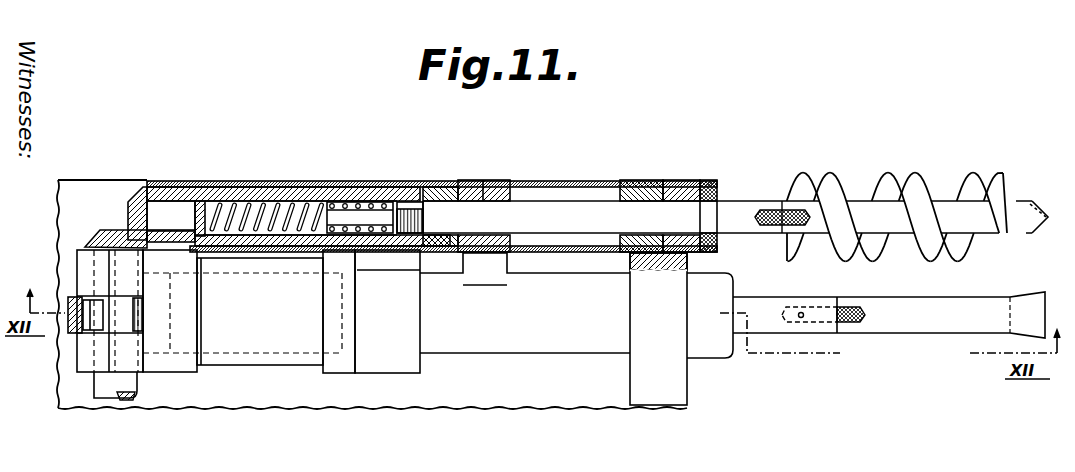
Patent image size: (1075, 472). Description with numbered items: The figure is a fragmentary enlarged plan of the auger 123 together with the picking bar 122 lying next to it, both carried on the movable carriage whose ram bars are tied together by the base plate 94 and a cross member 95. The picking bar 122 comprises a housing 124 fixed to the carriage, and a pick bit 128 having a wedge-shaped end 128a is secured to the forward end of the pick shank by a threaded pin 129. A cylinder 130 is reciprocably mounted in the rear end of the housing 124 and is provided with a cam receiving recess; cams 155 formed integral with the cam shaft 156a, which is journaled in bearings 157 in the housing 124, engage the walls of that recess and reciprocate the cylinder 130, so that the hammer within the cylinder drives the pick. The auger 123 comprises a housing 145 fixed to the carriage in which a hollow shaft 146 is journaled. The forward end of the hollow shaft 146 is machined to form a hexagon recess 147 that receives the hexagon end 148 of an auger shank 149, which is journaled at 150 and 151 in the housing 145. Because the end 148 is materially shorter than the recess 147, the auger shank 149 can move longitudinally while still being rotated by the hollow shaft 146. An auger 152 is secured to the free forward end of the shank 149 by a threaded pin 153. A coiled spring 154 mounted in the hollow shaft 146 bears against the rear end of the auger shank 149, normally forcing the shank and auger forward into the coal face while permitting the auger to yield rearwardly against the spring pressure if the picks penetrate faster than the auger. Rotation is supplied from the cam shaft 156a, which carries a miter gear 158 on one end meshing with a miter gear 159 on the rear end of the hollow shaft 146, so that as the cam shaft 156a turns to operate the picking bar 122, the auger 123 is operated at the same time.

The base plate 94 is at (537, 395).
The cross member 95 is at (660, 370).
The mechanical hammer or picking bar 122 is at (528, 311).
The auger 123 is at (600, 183).
The housing 124 is at (180, 363).
The pick bit 128 is at (905, 330).
The wedge-shaped end 128a is at (1025, 305).
The threaded pin 129 is at (808, 308).
The cylinder 130 is at (125, 307).
The housing 145 is at (240, 183).
The hollow shaft 146 is at (314, 185).
The hexagon recess 147 is at (418, 200).
The hexagon end 148 is at (410, 202).
The auger shank 149 is at (540, 216).
The journal 150 is at (482, 182).
The journal 151 is at (665, 183).
The auger 152 is at (912, 180).
The threaded pin 153 is at (773, 210).
The coiled spring 154 is at (287, 185).
The cam 155 is at (68, 302).
The cam shaft 156a is at (124, 396).
The bearing 157 is at (82, 259).
The miter gear 158 is at (93, 240).
The miter gear 159 is at (137, 192).